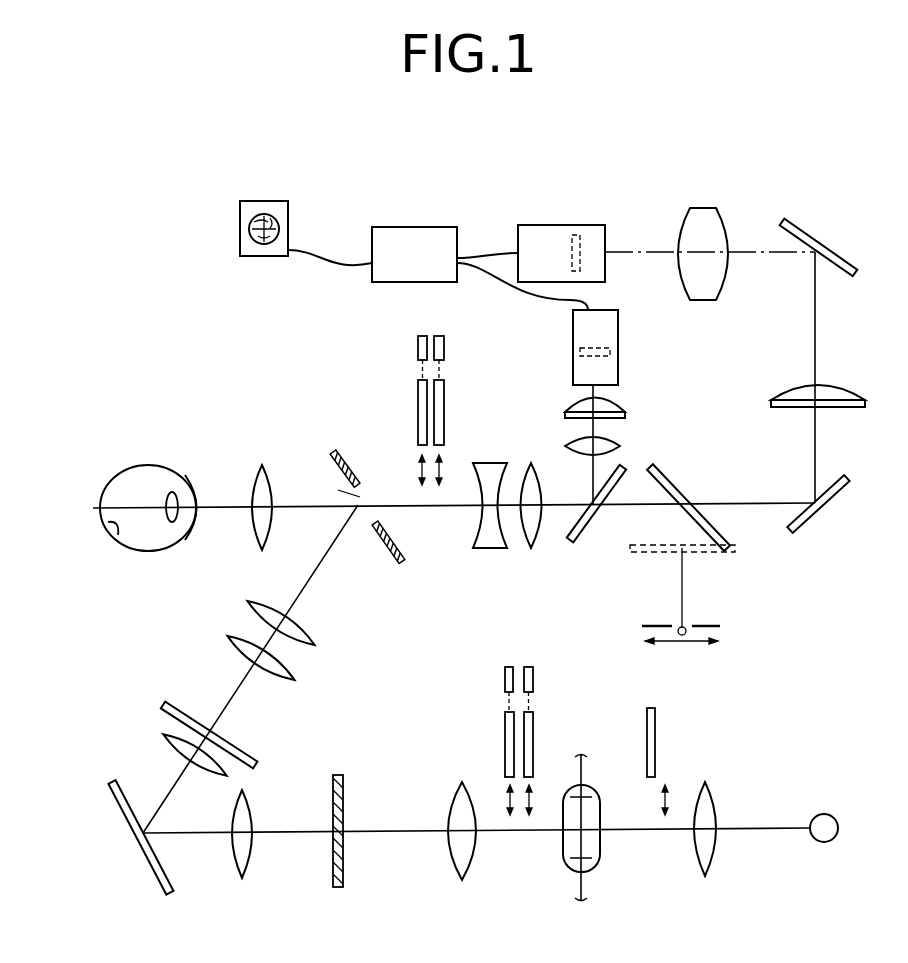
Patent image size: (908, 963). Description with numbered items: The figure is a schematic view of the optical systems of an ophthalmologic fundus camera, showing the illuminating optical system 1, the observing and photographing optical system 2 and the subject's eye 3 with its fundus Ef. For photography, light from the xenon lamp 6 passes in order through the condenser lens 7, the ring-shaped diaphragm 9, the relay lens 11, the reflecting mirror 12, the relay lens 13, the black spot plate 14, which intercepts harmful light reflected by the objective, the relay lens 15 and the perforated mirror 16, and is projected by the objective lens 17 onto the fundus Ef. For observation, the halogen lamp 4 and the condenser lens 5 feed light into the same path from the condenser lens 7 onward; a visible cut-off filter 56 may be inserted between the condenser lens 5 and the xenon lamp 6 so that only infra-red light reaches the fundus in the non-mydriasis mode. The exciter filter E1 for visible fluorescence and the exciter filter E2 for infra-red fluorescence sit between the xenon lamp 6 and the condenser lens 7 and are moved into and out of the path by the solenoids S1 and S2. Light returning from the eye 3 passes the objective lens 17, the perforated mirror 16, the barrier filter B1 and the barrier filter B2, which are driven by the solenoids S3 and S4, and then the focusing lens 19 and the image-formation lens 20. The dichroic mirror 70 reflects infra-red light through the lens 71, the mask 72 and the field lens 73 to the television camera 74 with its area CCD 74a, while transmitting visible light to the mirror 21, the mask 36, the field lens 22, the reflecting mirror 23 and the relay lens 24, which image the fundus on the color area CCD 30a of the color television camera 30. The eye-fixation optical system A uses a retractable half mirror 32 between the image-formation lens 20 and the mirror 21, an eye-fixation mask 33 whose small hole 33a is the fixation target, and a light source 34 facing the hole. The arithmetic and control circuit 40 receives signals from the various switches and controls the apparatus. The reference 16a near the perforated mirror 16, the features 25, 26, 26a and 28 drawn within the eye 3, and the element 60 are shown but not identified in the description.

The illuminating optical system 1 is at (556, 871).
The observing and photographing optical system 2 is at (445, 544).
The subject's eye 3 is at (148, 465).
The halogen lamp 4 is at (830, 815).
The condenser lens 5 is at (712, 868).
The xenon lamp 6 is at (598, 855).
The condenser lens 7 is at (455, 876).
The ring-shaped diaphragm 9 is at (345, 882).
The relay lens 11 is at (236, 862).
The reflecting mirror 12 is at (142, 857).
The relay lens 13 is at (165, 750).
The black spot plate 14 is at (190, 712).
The relay lens 15 is at (305, 645).
The perforated mirror 16 is at (345, 465).
The reflecting surface 16a is at (338, 490).
The objective lens 17 is at (262, 465).
The focusing lens 19 is at (487, 548).
The image-formation lens 20 is at (533, 548).
The mirror 21 is at (832, 497).
The field lens 22 is at (838, 388).
The reflecting mirror 23 is at (840, 250).
The relay lens 24 is at (703, 208).
The cornea 25 is at (197, 490).
The crystalline lens 26 is at (170, 540).
The lens surface 26a is at (172, 497).
The pupil 28 is at (185, 507).
The color television camera 30 is at (535, 225).
The color area CCD 30a is at (576, 235).
The half mirror 32 is at (688, 490).
The eye-fixation mask 33 is at (715, 623).
The small hole 33a is at (686, 626).
The light source for eye-fixation 34 is at (715, 641).
The mask 36 is at (852, 407).
The arithmetic and control circuit 40 is at (412, 227).
The visible cut-off filter 56 is at (648, 710).
The display 60 is at (283, 201).
The dichroic mirror 70 is at (595, 530).
The lens 71 is at (620, 446).
The mask 72 is at (625, 418).
The field lens 73 is at (620, 410).
The television camera for infra-red photography 74 is at (610, 310).
The area CCD 74a is at (605, 352).
The eye-fixation optical system A is at (563, 630).
The barrier filter for visible fluorescence B1 is at (444, 393).
The barrier filter for infra-red fluorescence B2 is at (418, 395).
The exciter filter for visible fluorescence E1 is at (533, 730).
The exciter filter for infra-red fluorescence E2 is at (505, 730).
The fundus Ef is at (118, 532).
The solenoid S1 is at (532, 670).
The solenoid S2 is at (505, 670).
The solenoid S3 is at (443, 336).
The solenoid S4 is at (418, 336).